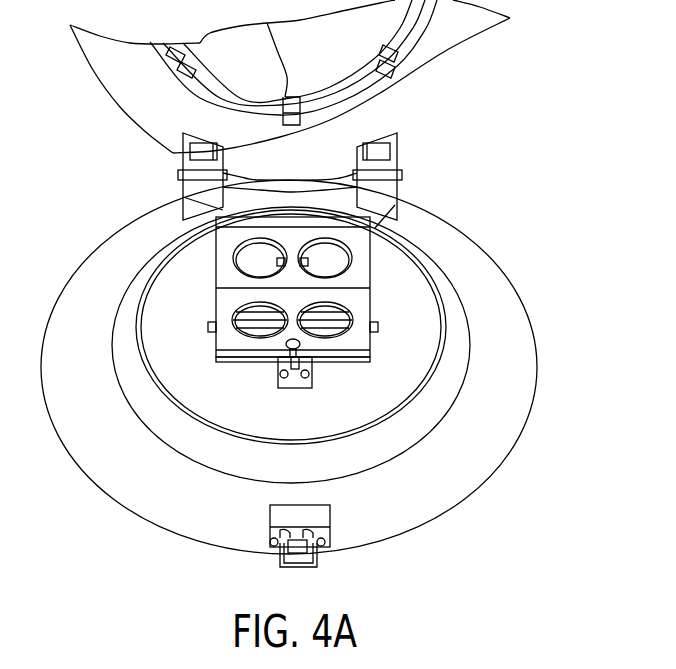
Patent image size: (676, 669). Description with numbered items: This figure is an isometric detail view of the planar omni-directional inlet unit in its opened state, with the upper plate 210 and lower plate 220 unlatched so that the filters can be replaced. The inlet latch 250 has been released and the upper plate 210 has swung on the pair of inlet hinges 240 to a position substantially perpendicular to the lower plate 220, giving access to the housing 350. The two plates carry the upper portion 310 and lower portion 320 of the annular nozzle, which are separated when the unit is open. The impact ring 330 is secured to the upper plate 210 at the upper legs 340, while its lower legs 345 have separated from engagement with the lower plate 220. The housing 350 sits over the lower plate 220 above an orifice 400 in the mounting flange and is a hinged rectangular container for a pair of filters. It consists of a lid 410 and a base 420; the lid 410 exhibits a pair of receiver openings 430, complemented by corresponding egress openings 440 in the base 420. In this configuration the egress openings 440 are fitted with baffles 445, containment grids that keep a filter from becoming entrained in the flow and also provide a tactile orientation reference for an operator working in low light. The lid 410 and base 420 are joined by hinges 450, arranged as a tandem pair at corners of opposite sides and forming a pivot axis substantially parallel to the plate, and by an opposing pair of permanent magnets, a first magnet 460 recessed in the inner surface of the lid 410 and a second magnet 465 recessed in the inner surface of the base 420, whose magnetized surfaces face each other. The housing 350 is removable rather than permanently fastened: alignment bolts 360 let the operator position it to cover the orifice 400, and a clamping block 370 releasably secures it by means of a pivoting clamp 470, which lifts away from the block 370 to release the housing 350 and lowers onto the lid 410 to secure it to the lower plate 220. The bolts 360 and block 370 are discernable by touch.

The upper plate 210 is at (450, 108).
The lower plate 220 is at (487, 463).
The inlet hinges 240 is at (387, 172).
The inlet latch 250 is at (330, 533).
The upper portion 310 is at (462, 40).
The lower portion 320 is at (437, 413).
The impact ring 330 is at (327, 107).
The upper legs 340 is at (268, 23).
The lower legs 345 is at (387, 62).
The housing 350 is at (387, 230).
The alignment bolts 360 is at (390, 316).
The clamping block 370 is at (280, 380).
The orifice 400 is at (318, 342).
The lid 410 is at (360, 268).
The base 420 is at (243, 347).
The receiver openings 430 is at (375, 231).
The egress openings 440 is at (345, 325).
The baffles 445 is at (352, 312).
The hinges 450 is at (200, 278).
The first magnet 460 is at (277, 225).
The second magnet 465 is at (260, 327).
The clamp 470 is at (300, 353).